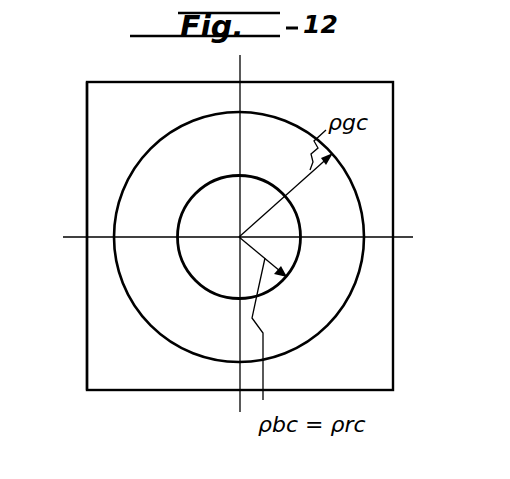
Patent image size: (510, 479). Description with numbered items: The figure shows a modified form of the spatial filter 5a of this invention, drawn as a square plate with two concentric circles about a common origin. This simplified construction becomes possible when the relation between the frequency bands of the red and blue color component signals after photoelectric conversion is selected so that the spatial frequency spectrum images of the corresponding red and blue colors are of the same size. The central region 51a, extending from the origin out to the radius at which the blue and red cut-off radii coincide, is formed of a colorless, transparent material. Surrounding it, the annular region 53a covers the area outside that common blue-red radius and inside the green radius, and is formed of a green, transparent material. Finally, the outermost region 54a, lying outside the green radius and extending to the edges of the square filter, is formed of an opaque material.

The spatial filter 5a is at (98, 60).
The opaque region 54a is at (62, 236).
The green transparent region 53a is at (199, 237).
The colorless transparent region 51a is at (168, 237).